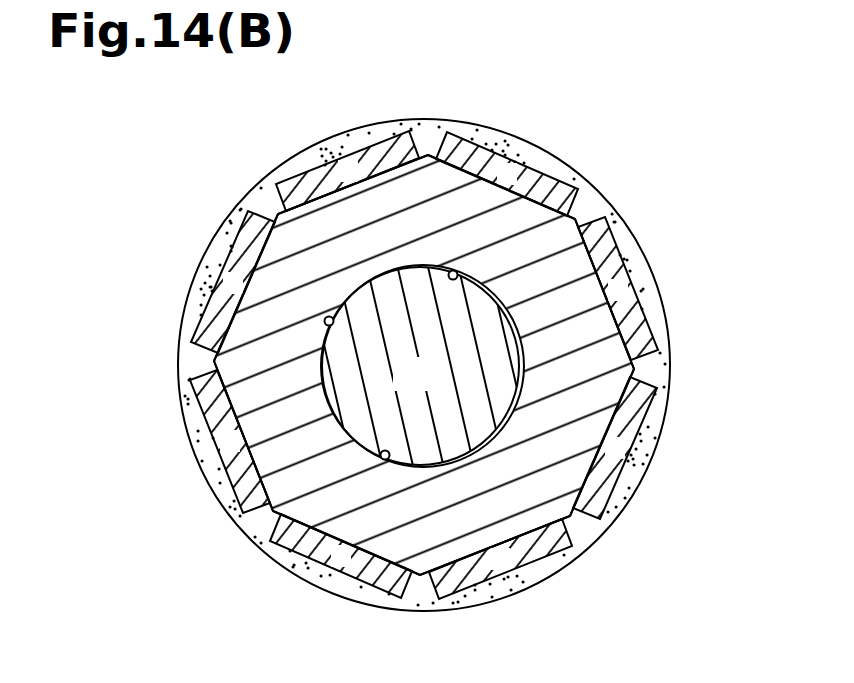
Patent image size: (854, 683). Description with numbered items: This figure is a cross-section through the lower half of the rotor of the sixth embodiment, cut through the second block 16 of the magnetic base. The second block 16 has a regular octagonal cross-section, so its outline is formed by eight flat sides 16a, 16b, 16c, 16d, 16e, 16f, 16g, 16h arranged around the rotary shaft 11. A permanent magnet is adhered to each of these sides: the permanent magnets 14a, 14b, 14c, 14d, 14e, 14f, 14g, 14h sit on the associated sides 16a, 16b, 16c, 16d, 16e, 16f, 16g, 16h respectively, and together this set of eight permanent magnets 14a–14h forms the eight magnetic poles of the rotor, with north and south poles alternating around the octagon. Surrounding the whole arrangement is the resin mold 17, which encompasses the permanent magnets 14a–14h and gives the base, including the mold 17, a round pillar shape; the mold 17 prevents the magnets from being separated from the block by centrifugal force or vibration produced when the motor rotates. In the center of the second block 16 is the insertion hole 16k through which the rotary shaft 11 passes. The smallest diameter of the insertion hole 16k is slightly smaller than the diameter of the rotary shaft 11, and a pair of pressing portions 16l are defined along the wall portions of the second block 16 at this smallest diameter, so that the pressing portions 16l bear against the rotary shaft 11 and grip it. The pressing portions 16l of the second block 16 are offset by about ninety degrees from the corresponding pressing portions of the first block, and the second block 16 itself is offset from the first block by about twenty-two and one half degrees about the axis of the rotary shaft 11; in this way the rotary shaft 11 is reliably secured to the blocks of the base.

The rotary shaft 11 is at (430, 389).
The permanent magnet 14a is at (543, 167).
The permanent magnet 14b is at (655, 300).
The permanent magnet 14c is at (625, 490).
The permanent magnet 14d is at (465, 606).
The permanent magnet 14e is at (296, 566).
The permanent magnet 14f is at (200, 418).
The permanent magnet 14g is at (216, 238).
The permanent magnet 14h is at (376, 136).
The second block 16 is at (573, 210).
The side of second block 16a is at (457, 143).
The side of second block 16b is at (625, 252).
The side of second block 16c is at (625, 413).
The side of second block 16d is at (543, 560).
The side of second block 16e is at (381, 600).
The side of second block 16f is at (220, 485).
The side of second block 16g is at (212, 323).
The side of second block 16h is at (327, 183).
The insertion hole 16k is at (328, 318).
The pressing portion 16l is at (457, 273).
The resin mold 17 is at (250, 542).